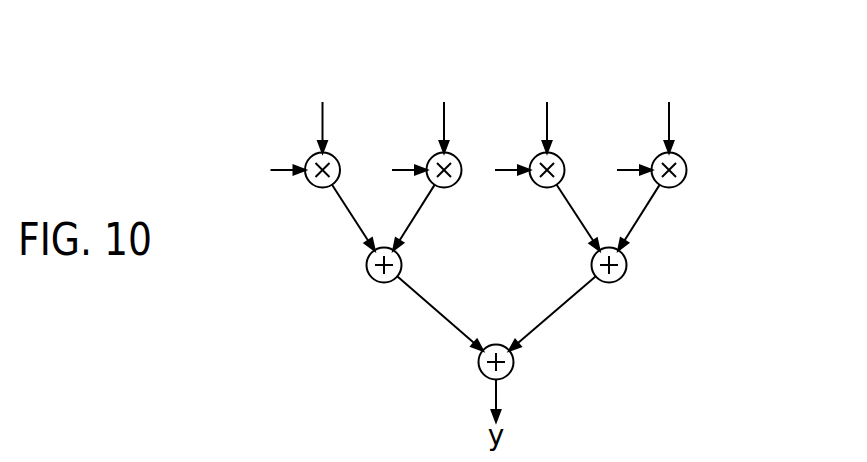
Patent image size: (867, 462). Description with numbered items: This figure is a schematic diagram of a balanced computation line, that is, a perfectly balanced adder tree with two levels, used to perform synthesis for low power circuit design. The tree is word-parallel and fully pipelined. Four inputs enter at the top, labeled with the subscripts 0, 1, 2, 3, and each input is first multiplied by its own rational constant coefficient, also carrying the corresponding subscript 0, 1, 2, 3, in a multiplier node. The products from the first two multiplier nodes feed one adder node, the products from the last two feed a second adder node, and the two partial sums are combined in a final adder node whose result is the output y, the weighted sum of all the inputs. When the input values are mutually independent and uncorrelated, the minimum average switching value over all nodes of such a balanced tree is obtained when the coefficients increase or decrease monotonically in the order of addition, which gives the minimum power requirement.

The first multiplier branch (input i0, coefficient alpha0) 0 is at (293, 126).
The second multiplier branch (input i1, coefficient alpha1) 1 is at (414, 126).
The third multiplier branch (input i2, coefficient alpha2) 2 is at (518, 126).
The fourth multiplier branch (input i3, coefficient alpha3) 3 is at (640, 126).